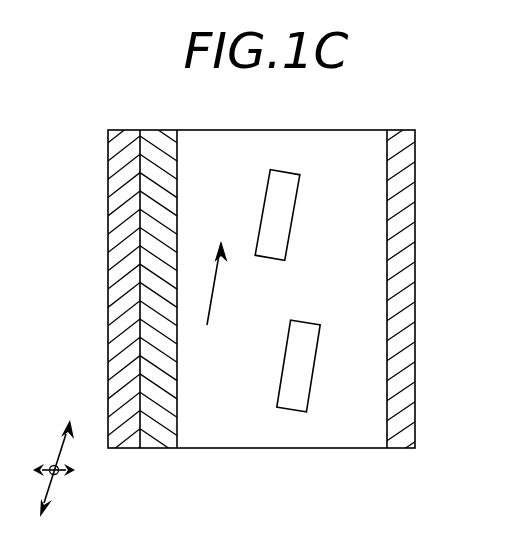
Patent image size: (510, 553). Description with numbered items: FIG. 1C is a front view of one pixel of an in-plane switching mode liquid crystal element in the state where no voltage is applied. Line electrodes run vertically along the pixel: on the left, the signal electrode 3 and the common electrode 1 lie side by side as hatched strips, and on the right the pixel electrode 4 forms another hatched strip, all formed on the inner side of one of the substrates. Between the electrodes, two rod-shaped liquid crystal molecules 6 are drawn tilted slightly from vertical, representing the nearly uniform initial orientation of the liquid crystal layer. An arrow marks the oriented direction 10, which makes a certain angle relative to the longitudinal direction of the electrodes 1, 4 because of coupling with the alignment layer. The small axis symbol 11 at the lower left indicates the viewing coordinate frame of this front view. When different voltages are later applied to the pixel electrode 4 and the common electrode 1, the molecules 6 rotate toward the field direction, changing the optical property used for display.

The common electrode 1 is at (153, 130).
The signal electrode 3 is at (116, 130).
The pixel electrode 4 is at (392, 130).
The liquid crystal molecules 6 is at (278, 240).
The oriented direction 10 is at (213, 298).
The coordinate axes 11 is at (50, 488).